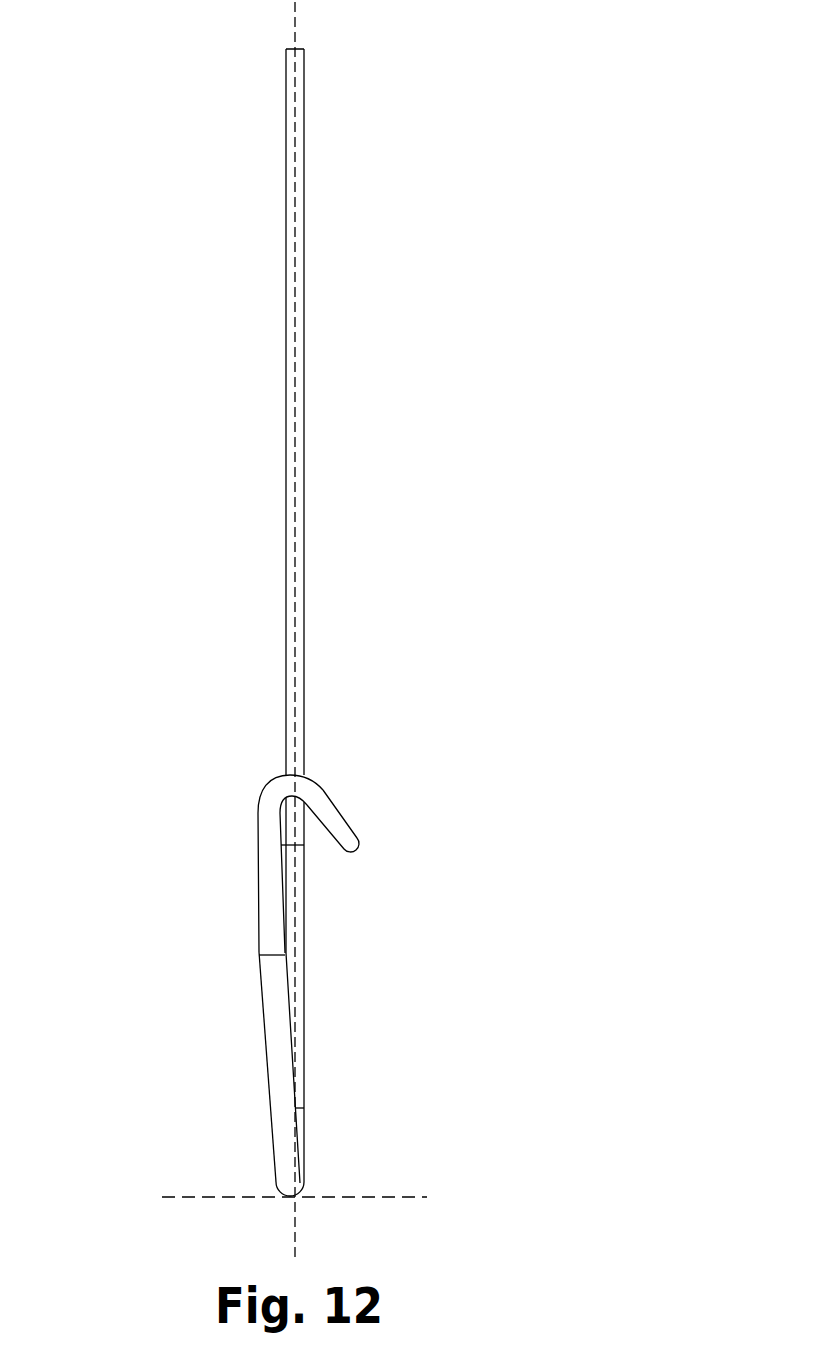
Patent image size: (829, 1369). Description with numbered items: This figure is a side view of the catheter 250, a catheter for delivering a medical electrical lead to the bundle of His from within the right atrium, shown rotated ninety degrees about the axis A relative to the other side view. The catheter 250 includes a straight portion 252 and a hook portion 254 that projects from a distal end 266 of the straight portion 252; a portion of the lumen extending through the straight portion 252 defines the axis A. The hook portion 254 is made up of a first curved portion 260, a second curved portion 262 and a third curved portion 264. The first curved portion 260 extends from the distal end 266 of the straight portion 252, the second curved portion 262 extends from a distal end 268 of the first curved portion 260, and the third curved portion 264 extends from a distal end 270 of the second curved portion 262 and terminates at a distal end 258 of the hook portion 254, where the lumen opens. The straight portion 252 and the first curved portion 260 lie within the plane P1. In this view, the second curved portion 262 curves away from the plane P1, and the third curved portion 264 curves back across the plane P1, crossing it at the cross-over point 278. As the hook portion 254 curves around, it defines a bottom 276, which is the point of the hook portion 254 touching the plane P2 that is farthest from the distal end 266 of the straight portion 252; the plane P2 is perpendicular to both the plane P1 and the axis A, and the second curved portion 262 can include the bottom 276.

The catheter 250 is at (292, 647).
The straight portion 252 is at (317, 522).
The hook portion 254 is at (317, 1040).
The distal end of the hook portion 258 is at (353, 843).
The first curved portion 260 is at (317, 975).
The second curved portion 262 is at (255, 1085).
The third curved portion 264 is at (246, 857).
The distal end of the straight portion 266 is at (306, 828).
The distal end of the first curved portion 268 is at (305, 1094).
The distal end of the second curved portion 270 is at (259, 973).
The bottom of the hook portion 276 is at (291, 1197).
The cross-over point 278 is at (293, 775).
The axis A is at (296, 44).
The plane P1 is at (295, 18).
The plane P2 is at (402, 1197).